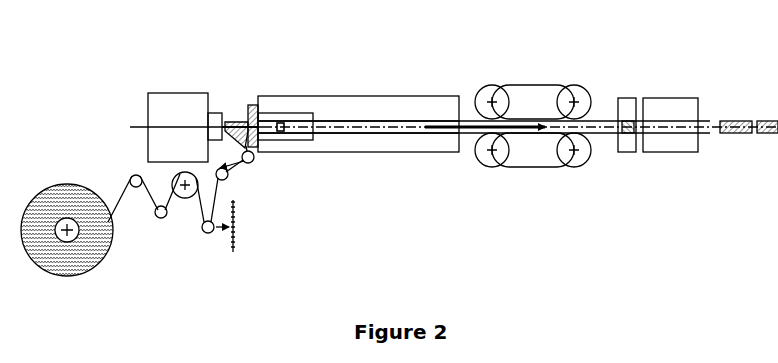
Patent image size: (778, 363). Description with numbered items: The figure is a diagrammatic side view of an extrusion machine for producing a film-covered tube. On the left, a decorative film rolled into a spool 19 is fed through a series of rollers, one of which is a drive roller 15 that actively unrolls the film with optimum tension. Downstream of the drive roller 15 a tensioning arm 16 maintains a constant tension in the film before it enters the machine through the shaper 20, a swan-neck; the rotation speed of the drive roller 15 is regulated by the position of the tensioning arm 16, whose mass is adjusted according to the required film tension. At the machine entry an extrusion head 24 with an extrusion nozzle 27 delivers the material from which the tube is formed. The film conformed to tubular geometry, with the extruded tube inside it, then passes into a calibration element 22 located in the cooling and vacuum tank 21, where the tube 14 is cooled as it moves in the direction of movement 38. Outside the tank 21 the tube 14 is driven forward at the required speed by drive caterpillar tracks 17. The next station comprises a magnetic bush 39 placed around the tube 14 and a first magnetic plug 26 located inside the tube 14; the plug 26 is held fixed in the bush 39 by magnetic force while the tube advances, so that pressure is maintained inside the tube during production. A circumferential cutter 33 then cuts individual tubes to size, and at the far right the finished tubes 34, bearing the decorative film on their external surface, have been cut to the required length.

The tube 14 is at (405, 134).
The drive roller 15 is at (185, 198).
The tensioning arm 16 is at (210, 235).
The drive caterpillar tracks 17 is at (521, 172).
The spool 19 is at (72, 258).
The shaper 20 is at (240, 117).
The cooling and vacuum tank 21 is at (367, 90).
The calibration element 22 is at (279, 100).
The extrusion head 24 is at (173, 103).
The first magnetic plug 26 is at (627, 135).
The extrusion nozzle 27 is at (234, 120).
The circumferential cutter 33 is at (668, 140).
The tubes 34 is at (737, 135).
The direction of movement 38 is at (468, 121).
The magnetic bush 39 is at (626, 104).